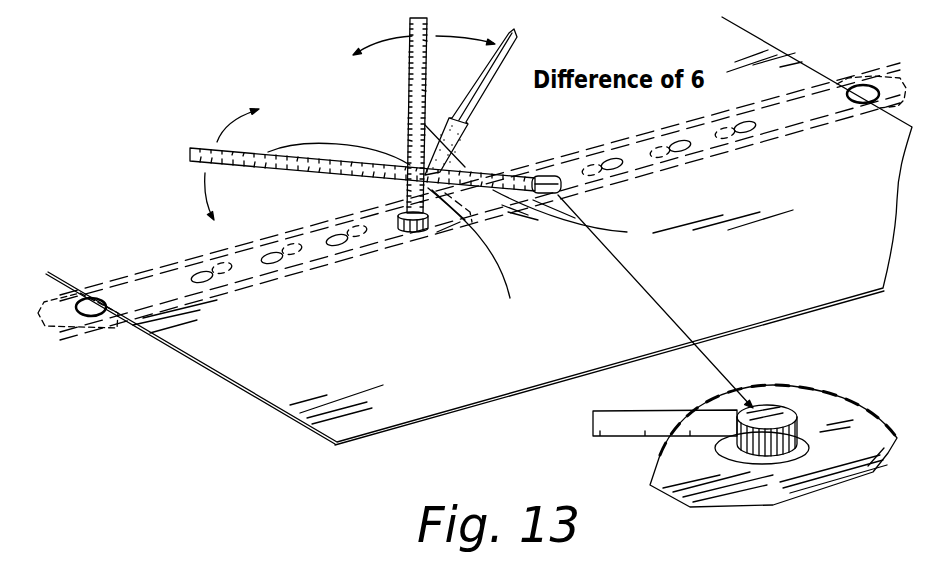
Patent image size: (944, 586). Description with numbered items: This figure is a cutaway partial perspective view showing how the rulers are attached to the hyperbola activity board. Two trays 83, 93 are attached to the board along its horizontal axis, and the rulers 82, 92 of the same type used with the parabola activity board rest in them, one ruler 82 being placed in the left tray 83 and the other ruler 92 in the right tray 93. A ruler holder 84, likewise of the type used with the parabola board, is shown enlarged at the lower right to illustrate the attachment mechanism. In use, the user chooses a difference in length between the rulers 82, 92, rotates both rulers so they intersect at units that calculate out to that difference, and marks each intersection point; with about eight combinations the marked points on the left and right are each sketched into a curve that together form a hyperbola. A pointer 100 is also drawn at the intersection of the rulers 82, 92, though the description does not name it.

The ruler 82 is at (415, 63).
The ruler 92 is at (252, 153).
The pointer 100 is at (482, 87).
The tray 83 is at (83, 327).
The tray 93 is at (850, 82).
The ruler holder 84 is at (773, 457).